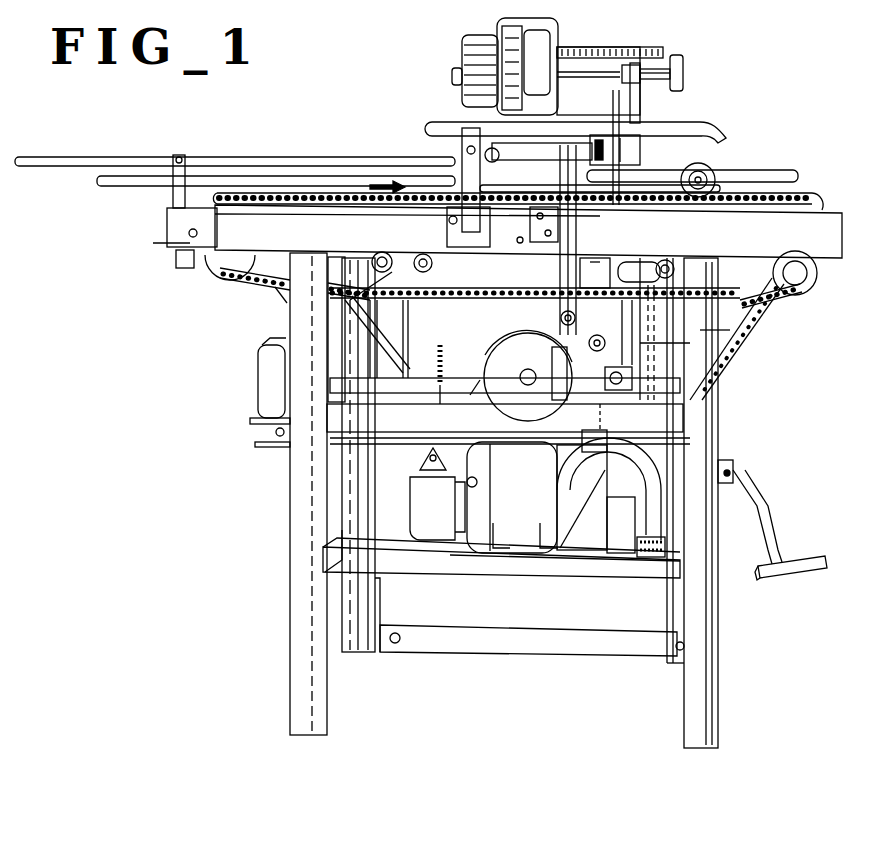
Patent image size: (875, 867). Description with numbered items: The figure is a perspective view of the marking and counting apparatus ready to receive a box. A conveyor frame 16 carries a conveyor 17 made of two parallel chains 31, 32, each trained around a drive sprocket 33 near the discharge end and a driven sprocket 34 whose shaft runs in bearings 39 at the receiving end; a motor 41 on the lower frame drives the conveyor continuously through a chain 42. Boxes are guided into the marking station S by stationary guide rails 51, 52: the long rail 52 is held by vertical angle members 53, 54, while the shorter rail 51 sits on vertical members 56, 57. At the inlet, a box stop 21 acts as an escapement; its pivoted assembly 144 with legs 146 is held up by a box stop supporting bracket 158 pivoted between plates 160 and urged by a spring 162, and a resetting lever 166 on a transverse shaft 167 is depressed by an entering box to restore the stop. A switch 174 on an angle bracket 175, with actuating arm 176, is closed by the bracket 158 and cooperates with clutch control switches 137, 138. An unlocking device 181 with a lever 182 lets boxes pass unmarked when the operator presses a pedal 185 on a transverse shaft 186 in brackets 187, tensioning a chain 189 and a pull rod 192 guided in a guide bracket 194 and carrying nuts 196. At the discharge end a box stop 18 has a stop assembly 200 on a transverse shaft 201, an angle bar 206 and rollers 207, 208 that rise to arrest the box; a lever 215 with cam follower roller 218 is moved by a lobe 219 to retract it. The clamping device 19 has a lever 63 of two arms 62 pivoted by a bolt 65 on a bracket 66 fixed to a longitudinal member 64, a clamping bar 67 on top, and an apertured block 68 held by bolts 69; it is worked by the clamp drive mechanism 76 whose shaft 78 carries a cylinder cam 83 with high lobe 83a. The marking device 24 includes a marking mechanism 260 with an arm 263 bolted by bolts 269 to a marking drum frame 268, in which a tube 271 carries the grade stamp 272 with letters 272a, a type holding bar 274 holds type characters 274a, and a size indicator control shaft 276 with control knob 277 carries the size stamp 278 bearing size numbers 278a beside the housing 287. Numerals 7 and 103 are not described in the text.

The carriage 7 is at (645, 457).
The conveyor frame 16 is at (722, 406).
The conveyor 17 is at (822, 197).
The box stop 18 is at (712, 170).
The clamping device 19 is at (708, 136).
The marking station S is at (765, 118).
The box stop 21 is at (300, 194).
The marking device 24 is at (576, 48).
The chain 31 is at (790, 300).
The chain 32 is at (468, 288).
The drive sprocket 33 is at (812, 284).
The driven sprocket 34 is at (240, 280).
The bearing 39 is at (185, 262).
The motor 41 is at (565, 501).
The chain 42 is at (730, 330).
The guide rail 51 is at (72, 162).
The guide rail 52 is at (150, 184).
The vertical angle member 53 is at (266, 196).
The vertical angle member 54 is at (722, 190).
The vertical member 56 is at (178, 212).
The vertical member 57 is at (426, 257).
The arm 62 is at (560, 218).
The lever 63 is at (600, 267).
The longitudinal member 64 is at (528, 231).
The bolt 65 is at (536, 222).
The bracket 66 is at (536, 242).
The clamping bar 67 is at (440, 136).
The apertured block 68 is at (604, 338).
The bolt 69 is at (553, 322).
The clamp drive mechanism 76 is at (505, 388).
The shaft 78 is at (526, 374).
The cylinder cam 83 is at (492, 348).
The high lobe 83a is at (484, 370).
The auxiliary motor 103 is at (455, 525).
The clutch control switch 137 is at (581, 418).
The clutch control switch 138 is at (505, 418).
The pivotally mounted assembly 144 is at (324, 266).
The leg 146 is at (265, 266).
The box stop supporting bracket 158 is at (325, 300).
The plate 160 is at (352, 394).
The spring 162 is at (330, 337).
The resetting lever 166 is at (450, 162).
The transverse shaft 167 is at (390, 252).
The switch 174 is at (270, 376).
The angle bracket 175 is at (258, 418).
The actuating arm 176 is at (260, 350).
The unlocking device 181 is at (544, 452).
The lever 182 is at (255, 444).
The pedal 185 is at (790, 558).
The transverse shaft 186 is at (734, 473).
The bracket 187 is at (735, 466).
The chain 189 is at (605, 432).
The pull rod 192 is at (432, 406).
The guide bracket 194 is at (375, 440).
The nut 196 is at (276, 431).
The stop assembly 200 is at (680, 272).
The transverse shaft 201 is at (748, 298).
The angle bar 206 is at (646, 271).
The roller 207 is at (690, 162).
The roller 208 is at (660, 167).
The lever 215 is at (690, 343).
The cam follower roller 218 is at (632, 362).
The lobe 219 is at (480, 392).
The marking mechanism 260 is at (470, 105).
The arm 263 is at (484, 155).
The marking drum frame 268 is at (502, 20).
The bolt 269 is at (624, 102).
The tube 271 is at (592, 70).
The grade stamp 272 is at (552, 82).
The grade type character 272a is at (540, 52).
The type holding bar 274 is at (678, 44).
The type character 274a is at (660, 66).
The size indicator control shaft 276 is at (686, 82).
The control knob 277 is at (686, 70).
The size stamp 278 is at (463, 65).
The size indicating number 278a is at (468, 60).
The housing 287 is at (470, 82).